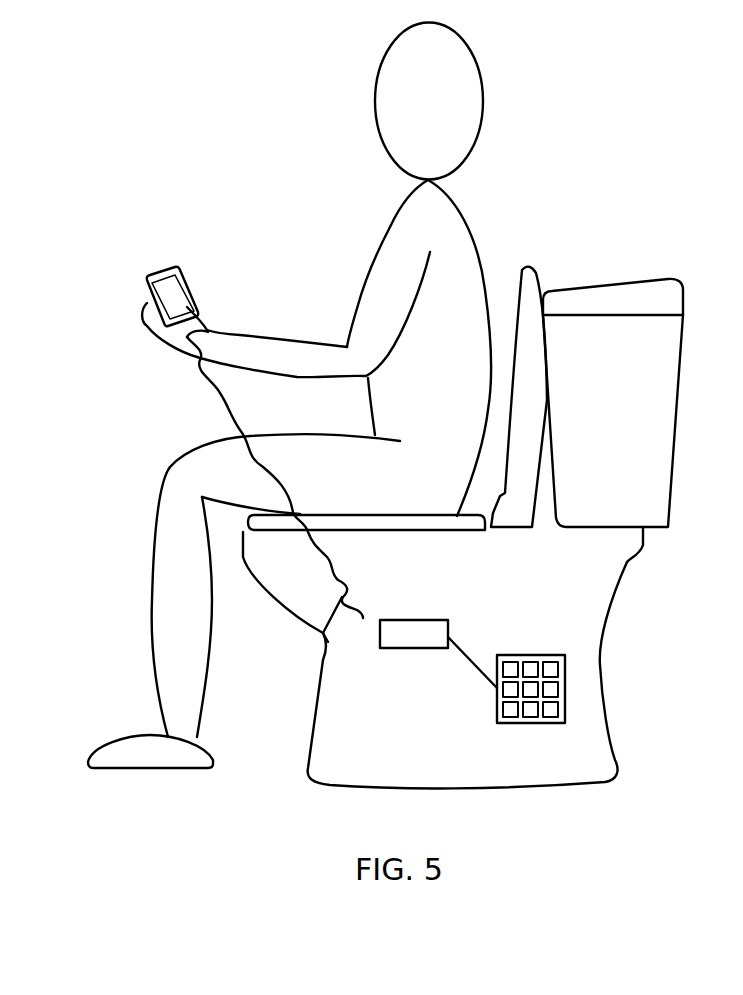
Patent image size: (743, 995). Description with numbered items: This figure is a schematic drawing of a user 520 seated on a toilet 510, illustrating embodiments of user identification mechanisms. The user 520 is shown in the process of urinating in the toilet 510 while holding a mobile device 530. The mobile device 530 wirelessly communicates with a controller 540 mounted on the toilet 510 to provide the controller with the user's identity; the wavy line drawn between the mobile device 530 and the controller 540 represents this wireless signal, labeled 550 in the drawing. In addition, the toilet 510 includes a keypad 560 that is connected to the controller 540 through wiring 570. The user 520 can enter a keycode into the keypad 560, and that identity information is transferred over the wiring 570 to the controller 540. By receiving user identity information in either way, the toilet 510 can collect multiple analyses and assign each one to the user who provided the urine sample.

The toilet 510 is at (603, 593).
The user 520 is at (390, 271).
The mobile device 530 is at (157, 293).
The controller 540 is at (403, 640).
The cable connection 550 is at (320, 637).
The keypad 560 is at (565, 687).
The wiring 570 is at (468, 652).